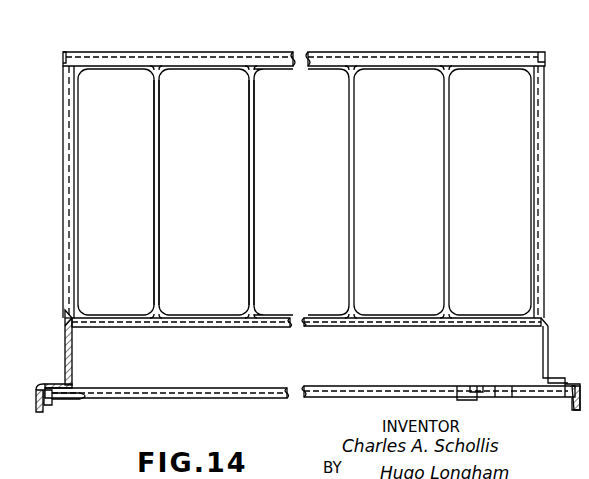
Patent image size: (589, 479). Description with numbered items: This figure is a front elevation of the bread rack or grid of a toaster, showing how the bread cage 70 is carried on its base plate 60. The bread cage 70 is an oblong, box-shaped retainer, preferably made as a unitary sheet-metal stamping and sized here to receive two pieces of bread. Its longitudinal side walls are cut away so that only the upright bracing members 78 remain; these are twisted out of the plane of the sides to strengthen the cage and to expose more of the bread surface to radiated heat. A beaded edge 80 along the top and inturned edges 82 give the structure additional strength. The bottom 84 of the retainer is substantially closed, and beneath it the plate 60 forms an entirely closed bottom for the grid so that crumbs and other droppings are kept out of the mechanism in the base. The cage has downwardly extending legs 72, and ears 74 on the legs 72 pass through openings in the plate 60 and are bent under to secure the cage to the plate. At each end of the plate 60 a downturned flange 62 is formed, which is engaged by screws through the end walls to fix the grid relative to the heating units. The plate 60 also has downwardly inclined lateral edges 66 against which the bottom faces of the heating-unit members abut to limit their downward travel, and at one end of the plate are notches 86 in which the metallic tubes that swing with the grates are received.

The base plate 60 is at (207, 389).
The downturned flange 62 is at (38, 406).
The downwardly inclined lateral edges 66 is at (133, 399).
The bread cage 70 is at (207, 80).
The legs 72 is at (73, 354).
The ears 74 is at (50, 402).
The upright bracing members 78 is at (249, 200).
The beaded edge 80 is at (64, 52).
The inturned edges 82 is at (75, 166).
The bottom 84 is at (212, 328).
The notches 86 is at (500, 398).